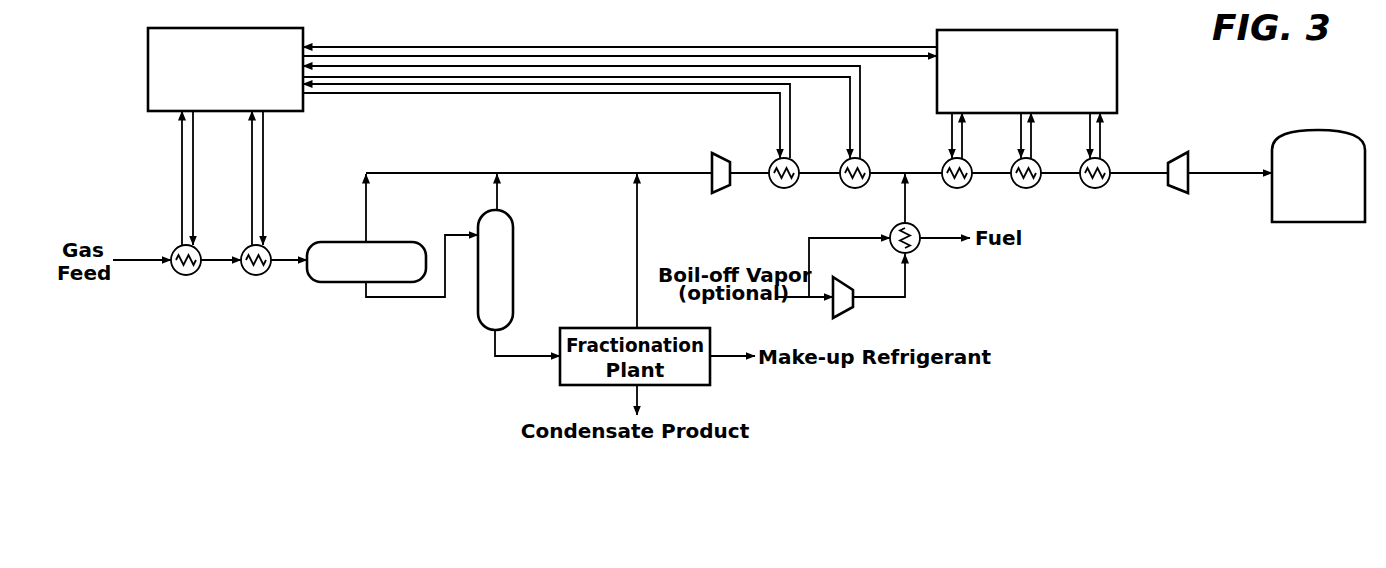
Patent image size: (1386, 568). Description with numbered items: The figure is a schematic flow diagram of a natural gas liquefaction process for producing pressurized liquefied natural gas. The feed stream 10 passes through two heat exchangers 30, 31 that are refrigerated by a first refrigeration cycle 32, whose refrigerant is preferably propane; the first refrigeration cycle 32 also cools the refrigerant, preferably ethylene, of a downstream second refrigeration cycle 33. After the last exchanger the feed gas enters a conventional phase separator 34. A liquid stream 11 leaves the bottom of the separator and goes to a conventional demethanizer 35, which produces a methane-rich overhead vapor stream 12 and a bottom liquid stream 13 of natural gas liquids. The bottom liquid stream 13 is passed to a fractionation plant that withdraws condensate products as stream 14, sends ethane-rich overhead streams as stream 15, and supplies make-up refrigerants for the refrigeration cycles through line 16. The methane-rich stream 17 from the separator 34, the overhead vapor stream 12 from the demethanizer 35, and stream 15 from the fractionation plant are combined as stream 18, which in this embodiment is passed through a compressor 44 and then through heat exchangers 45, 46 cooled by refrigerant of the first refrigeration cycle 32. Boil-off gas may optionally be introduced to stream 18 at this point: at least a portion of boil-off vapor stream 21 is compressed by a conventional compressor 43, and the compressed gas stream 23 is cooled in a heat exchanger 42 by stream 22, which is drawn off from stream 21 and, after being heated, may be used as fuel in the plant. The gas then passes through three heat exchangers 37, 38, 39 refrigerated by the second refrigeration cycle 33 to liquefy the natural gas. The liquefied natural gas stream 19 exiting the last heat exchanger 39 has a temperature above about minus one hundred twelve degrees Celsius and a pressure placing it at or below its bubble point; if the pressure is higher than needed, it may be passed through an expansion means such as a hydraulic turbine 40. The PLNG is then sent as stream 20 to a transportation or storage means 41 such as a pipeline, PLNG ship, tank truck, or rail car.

The feed stream 10 is at (133, 262).
The liquid stream 11 is at (410, 297).
The overhead vapor stream 12 is at (497, 200).
The bottom liquid stream 13 is at (505, 356).
The condensate product stream 14 is at (637, 395).
The overhead stream 15 is at (637, 213).
The refrigerant make-up line 16 is at (722, 357).
The methane-rich stream 17 is at (366, 200).
The combined stream 18 is at (700, 172).
The liquefied natural gas stream 19 is at (1133, 175).
The PLNG stream 20 is at (1222, 175).
The boil-off vapor stream 21 is at (790, 298).
The cooling stream 22 is at (809, 250).
The compressed gas stream 23 is at (905, 280).
The heat exchanger 30 is at (186, 275).
The heat exchanger 31 is at (256, 275).
The first refrigeration cycle 32 is at (148, 52).
The second refrigeration cycle 33 is at (1117, 50).
The phase separator 34 is at (346, 242).
The demethanizer 35 is at (513, 296).
The heat exchanger 37 is at (957, 188).
The heat exchanger 38 is at (1026, 188).
The heat exchanger 39 is at (1095, 188).
The hydraulic turbine 40 is at (1170, 160).
The transportation or storage means 41 is at (1290, 132).
The heat exchanger 42 is at (915, 250).
The compressor 43 is at (840, 282).
The compressor 44 is at (716, 194).
The heat exchanger 45 is at (784, 188).
The heat exchanger 46 is at (855, 188).